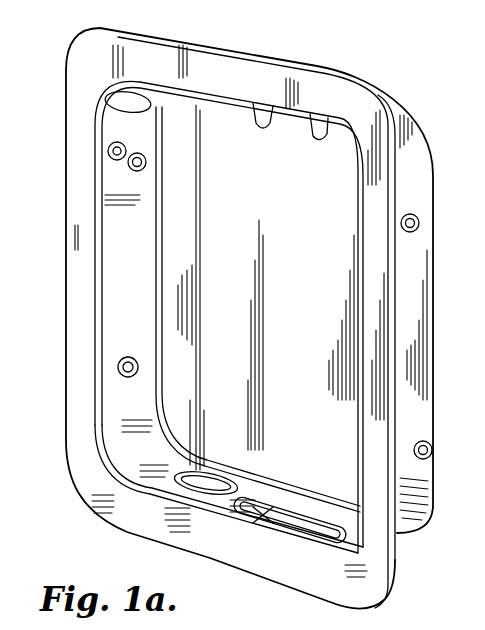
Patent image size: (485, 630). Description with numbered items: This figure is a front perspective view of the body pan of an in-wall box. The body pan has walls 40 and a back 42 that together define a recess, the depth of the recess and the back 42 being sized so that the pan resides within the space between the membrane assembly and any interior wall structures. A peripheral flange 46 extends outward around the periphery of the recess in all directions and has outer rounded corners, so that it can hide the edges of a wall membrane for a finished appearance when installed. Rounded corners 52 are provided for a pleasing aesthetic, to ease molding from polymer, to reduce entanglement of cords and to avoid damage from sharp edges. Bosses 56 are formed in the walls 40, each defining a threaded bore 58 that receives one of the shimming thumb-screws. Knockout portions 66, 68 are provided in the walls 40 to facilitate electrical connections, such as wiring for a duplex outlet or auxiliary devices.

The walls 40 is at (265, 95).
The back 42 is at (266, 207).
The peripheral flange 46 is at (72, 490).
The rounded corners 52 is at (158, 138).
The bosses 56 is at (130, 168).
The threaded bore 58 is at (145, 138).
The knockout portion 66 is at (175, 492).
The knockout portion 68 is at (255, 518).